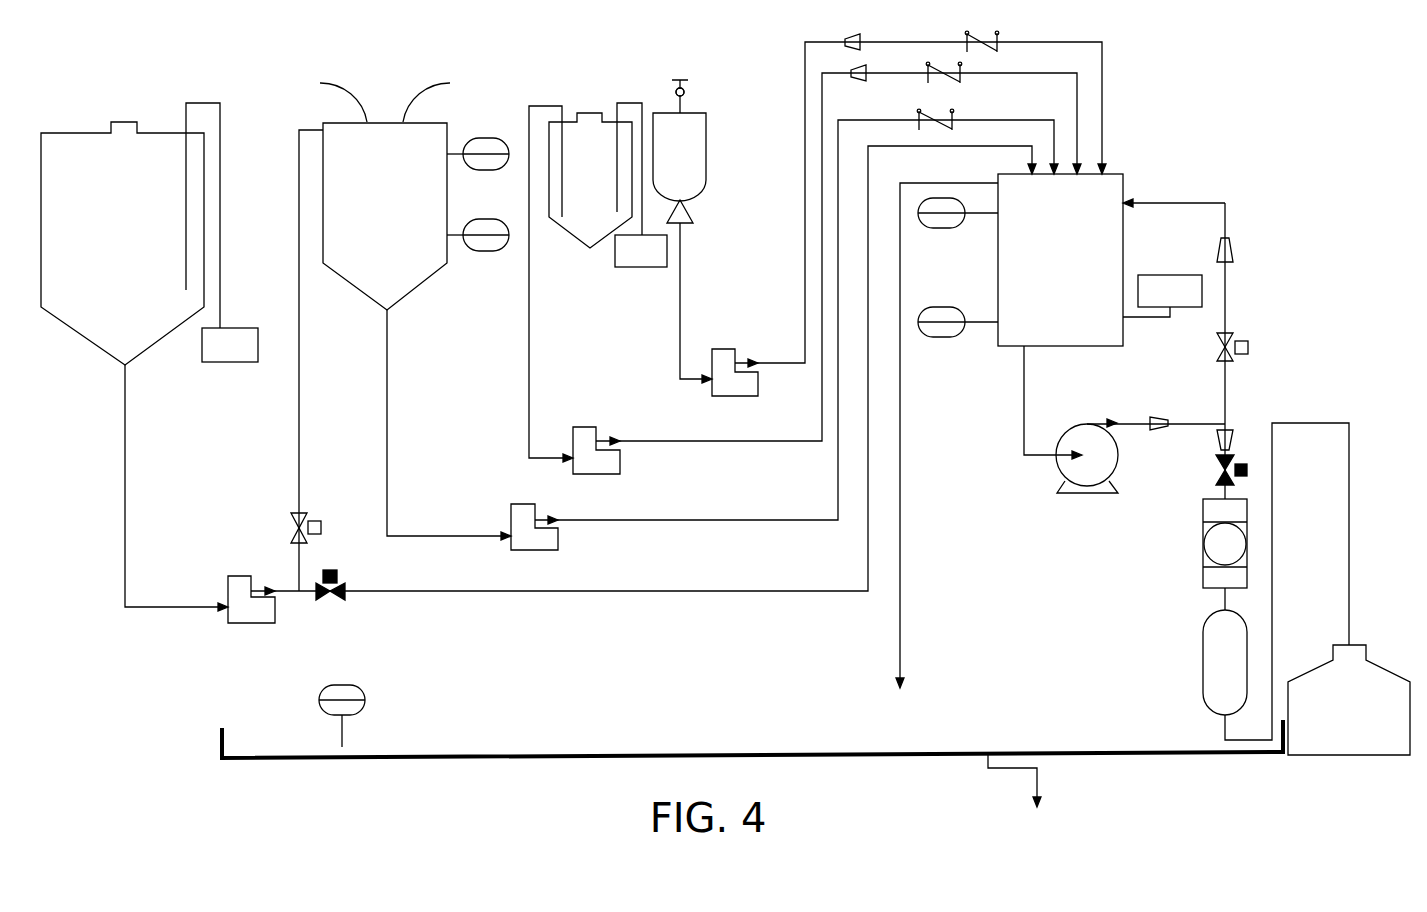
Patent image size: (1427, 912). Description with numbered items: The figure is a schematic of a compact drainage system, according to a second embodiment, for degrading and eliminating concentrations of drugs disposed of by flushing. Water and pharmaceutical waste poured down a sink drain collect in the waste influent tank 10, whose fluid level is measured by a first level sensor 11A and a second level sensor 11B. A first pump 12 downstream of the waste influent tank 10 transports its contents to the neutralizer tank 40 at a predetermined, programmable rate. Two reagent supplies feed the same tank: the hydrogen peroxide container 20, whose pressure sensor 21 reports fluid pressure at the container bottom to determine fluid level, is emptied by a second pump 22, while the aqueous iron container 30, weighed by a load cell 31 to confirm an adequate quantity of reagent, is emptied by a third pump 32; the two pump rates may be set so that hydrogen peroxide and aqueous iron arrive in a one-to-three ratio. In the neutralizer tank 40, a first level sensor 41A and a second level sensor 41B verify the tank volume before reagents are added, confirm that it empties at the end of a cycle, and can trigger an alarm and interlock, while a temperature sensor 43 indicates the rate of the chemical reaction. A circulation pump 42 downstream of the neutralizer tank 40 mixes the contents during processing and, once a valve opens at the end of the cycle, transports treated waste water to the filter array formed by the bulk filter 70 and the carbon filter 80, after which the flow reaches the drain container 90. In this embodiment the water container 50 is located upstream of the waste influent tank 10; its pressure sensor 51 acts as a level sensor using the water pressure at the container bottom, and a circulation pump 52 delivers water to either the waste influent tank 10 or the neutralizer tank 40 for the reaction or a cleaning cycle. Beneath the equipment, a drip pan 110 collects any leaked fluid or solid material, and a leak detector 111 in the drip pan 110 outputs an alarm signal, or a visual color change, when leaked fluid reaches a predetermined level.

The waste influent tank 10 is at (401, 337).
The first level sensor 11A is at (478, 136).
The second level sensor 11B is at (478, 250).
The first pump 12 is at (784, 329).
The hydrogen peroxide container 20 is at (580, 284).
The pressure sensor 21 is at (641, 185).
The second pump 22 is at (827, 268).
The aqueous iron container 30 is at (682, 231).
The load cell 31 is at (684, 88).
The third pump 32 is at (909, 213).
The neutralizer tank 40 is at (1072, 431).
The first level sensor 41A is at (958, 228).
The second level sensor 41B is at (958, 339).
The circulation pump 42 is at (1124, 436).
The temperature sensor 43 is at (1162, 285).
The water container 50 is at (134, 366).
The pressure sensor 51 is at (222, 232).
The circulation pump 52 is at (632, 384).
The bulk filter 70 is at (1203, 543).
The carbon filter 80 is at (1203, 652).
The drain container 90 is at (1349, 700).
The drip pan 110 is at (692, 757).
The leak detector 111 is at (342, 705).